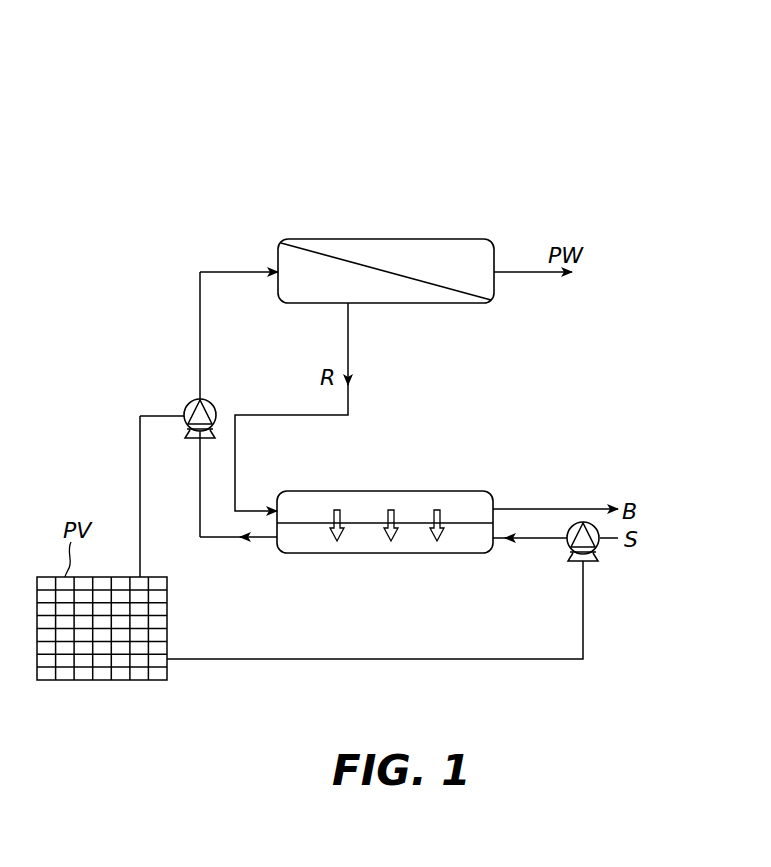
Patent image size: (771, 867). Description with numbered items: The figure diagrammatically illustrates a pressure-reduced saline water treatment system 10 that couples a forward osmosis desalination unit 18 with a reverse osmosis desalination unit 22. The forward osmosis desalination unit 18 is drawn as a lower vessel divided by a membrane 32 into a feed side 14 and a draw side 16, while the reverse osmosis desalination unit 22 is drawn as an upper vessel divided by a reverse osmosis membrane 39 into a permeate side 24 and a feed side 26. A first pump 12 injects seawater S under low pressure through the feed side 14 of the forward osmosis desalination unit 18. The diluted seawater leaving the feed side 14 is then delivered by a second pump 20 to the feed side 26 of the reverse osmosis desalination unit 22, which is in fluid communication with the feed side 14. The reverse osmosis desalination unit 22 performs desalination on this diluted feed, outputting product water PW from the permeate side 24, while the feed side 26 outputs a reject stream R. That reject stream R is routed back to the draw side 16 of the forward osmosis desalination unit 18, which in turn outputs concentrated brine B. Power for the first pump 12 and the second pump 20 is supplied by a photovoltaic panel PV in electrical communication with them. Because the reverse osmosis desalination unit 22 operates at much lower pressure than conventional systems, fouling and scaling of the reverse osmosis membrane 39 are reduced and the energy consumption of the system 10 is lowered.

The pressure-reduced saline water treatment system 10 is at (128, 90).
The first pump 12 is at (590, 560).
The feed side 14 is at (457, 546).
The draw side 16 is at (466, 500).
The forward osmosis desalination unit 18 is at (305, 553).
The second pump 20 is at (184, 408).
The reverse osmosis desalination unit 22 is at (330, 239).
The permeate side 24 is at (424, 258).
The feed side 26 is at (316, 283).
The membrane 32 is at (302, 523).
The reverse osmosis membrane 39 is at (380, 268).